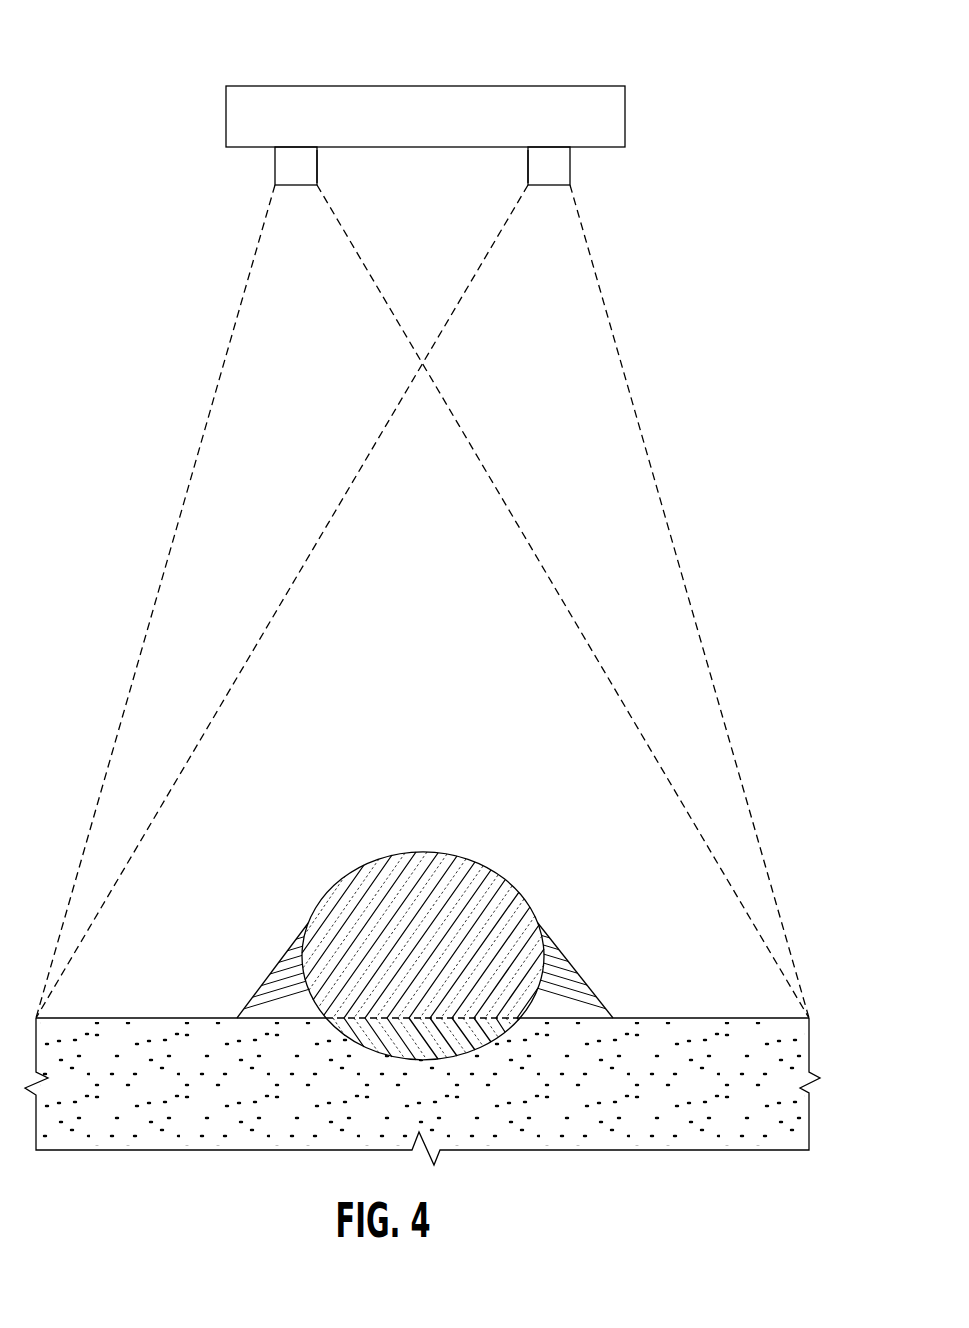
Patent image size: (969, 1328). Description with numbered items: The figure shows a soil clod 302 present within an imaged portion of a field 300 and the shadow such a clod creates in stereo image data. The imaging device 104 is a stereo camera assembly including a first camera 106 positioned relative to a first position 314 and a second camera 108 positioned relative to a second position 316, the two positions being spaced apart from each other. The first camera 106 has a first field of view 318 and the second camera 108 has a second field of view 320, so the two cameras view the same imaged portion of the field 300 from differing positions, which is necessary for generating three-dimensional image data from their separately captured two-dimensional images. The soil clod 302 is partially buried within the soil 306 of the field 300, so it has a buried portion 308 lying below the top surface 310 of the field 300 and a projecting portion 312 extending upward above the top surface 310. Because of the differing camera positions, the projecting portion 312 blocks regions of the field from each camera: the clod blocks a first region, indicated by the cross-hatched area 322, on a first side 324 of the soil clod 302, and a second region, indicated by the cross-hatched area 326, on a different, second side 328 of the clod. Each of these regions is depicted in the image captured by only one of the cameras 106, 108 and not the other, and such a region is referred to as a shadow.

The field 300 is at (103, 99).
The imaging device 104 is at (375, 97).
The first camera 106 is at (273, 167).
The second camera 108 is at (572, 165).
The first position 314 is at (321, 170).
The second position 316 is at (524, 170).
The first field of view 318 is at (252, 265).
The second field of view 320 is at (473, 277).
The soil clod 302 is at (431, 932).
The projecting portion 312 is at (493, 872).
The buried portion 308 is at (507, 1027).
The soil 306 is at (172, 1094).
The top surface 310 is at (170, 1017).
The cross-hatched area 326 is at (268, 974).
The cross-hatched area 322 is at (577, 982).
The second side 328 is at (291, 856).
The first side 324 is at (607, 837).